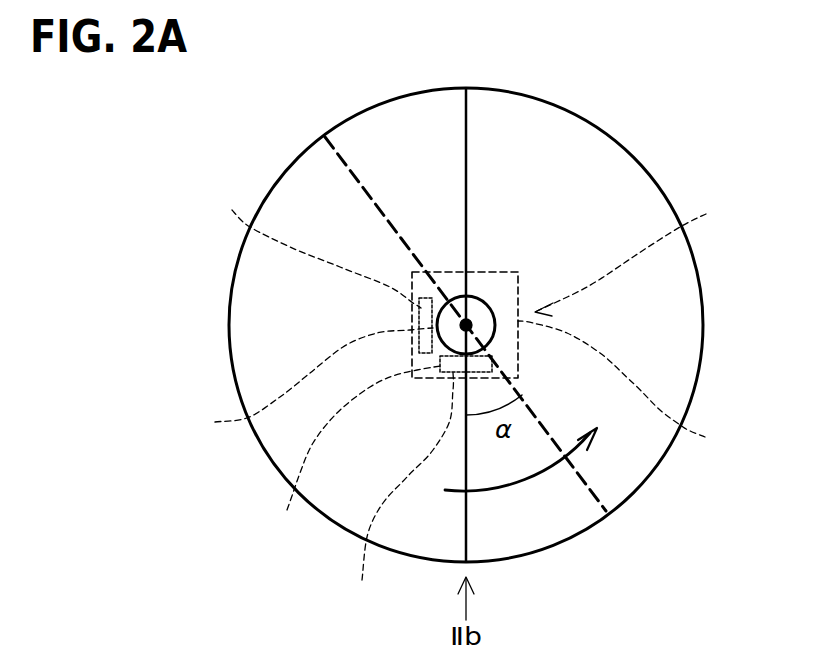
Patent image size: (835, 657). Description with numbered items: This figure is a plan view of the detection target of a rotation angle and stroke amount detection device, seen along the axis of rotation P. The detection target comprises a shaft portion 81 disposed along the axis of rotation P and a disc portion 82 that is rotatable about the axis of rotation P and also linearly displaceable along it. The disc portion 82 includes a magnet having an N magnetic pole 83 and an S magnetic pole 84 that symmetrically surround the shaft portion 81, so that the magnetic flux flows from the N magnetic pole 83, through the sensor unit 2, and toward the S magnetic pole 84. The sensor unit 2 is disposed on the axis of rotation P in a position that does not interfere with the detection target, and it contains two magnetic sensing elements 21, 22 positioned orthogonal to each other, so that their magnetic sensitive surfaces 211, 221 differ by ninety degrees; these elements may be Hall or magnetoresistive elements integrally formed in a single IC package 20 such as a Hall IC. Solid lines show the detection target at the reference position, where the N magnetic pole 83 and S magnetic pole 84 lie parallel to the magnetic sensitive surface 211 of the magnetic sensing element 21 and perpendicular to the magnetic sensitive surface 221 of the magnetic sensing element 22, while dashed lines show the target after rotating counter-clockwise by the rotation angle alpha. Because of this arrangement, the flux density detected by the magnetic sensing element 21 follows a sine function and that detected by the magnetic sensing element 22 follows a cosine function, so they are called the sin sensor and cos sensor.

The sensor unit 2 is at (627, 258).
The IC package 20 is at (624, 389).
The magnetic sensing element 21 is at (383, 446).
The magnetic sensitive surface 211 is at (395, 489).
The magnetic sensing element 22 is at (320, 268).
The magnetic sensitive surface 221 is at (306, 386).
The shaft portion 81 is at (478, 302).
The disc portion 82 is at (439, 127).
The N magnetic pole 83 is at (248, 311).
The S magnetic pole 84 is at (687, 310).
The axis of rotation P is at (468, 318).